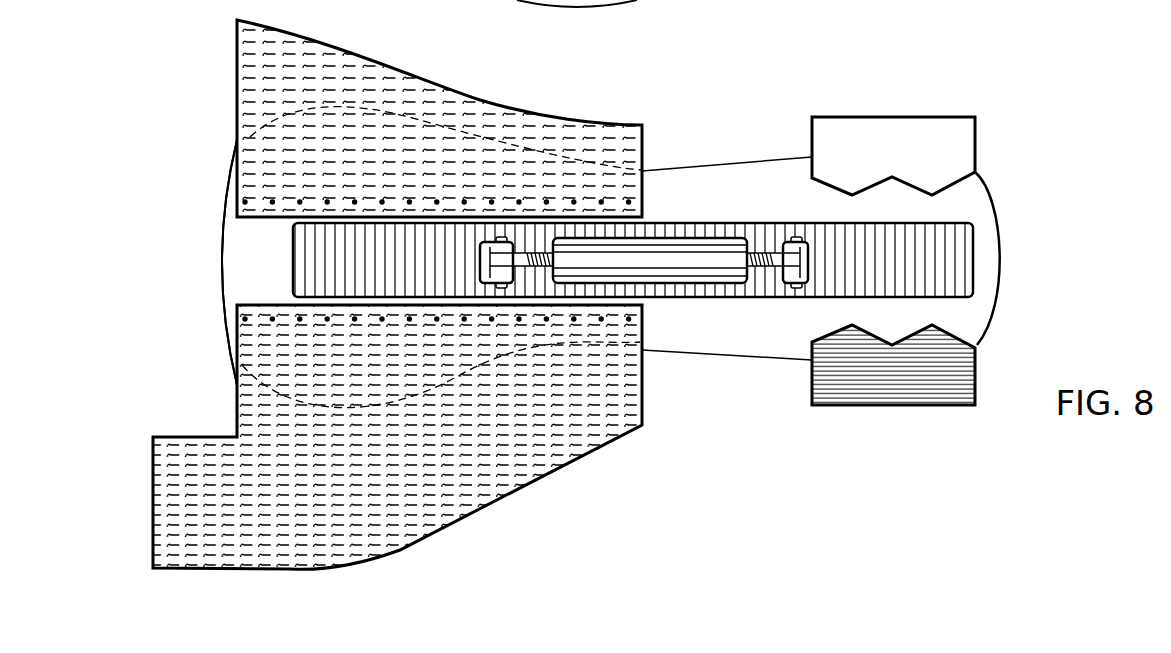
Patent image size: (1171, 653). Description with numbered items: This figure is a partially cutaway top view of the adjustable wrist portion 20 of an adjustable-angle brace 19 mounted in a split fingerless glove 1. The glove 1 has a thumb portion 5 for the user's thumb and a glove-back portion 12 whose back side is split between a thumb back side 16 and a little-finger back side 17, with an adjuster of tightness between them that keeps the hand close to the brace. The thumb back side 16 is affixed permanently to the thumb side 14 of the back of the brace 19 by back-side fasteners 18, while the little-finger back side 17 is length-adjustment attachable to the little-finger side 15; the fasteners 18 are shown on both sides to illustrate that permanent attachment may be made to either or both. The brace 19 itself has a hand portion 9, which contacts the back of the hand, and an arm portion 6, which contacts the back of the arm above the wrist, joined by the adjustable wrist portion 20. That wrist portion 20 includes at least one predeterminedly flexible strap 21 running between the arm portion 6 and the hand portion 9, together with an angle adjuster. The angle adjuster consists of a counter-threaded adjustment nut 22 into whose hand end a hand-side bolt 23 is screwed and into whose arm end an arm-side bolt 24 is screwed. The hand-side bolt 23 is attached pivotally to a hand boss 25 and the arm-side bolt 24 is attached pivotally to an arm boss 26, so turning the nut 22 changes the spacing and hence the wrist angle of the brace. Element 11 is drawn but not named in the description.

The fingerless glove 1 is at (651, 478).
The thumb portion 5 is at (195, 506).
The arm portion 6 is at (962, 214).
The hand portion 9 is at (246, 270).
The anchor block 11 is at (878, 158).
The glove-back portion 12 is at (357, 345).
The thumb side 14 is at (223, 305).
The little-finger side 15 is at (226, 188).
The thumb back side 16 is at (352, 305).
The little-finger back side 17 is at (262, 215).
The back-side fasteners 18 is at (243, 202).
The adjustable-angle brace 19 is at (1040, 262).
The adjustable wrist portion 20 is at (700, 214).
The flexible strap 21 is at (377, 248).
The counter-threaded adjustment nut 22 is at (655, 268).
The hand-side bolt 23 is at (540, 253).
The arm-side bolt 24 is at (772, 253).
The hand boss 25 is at (507, 242).
The arm boss 26 is at (792, 275).